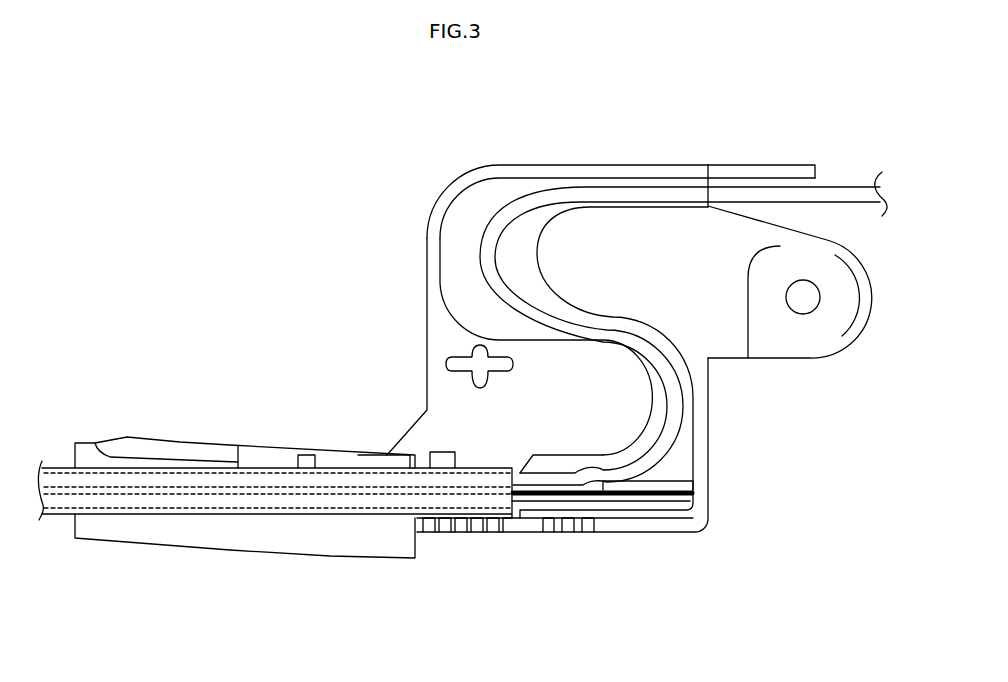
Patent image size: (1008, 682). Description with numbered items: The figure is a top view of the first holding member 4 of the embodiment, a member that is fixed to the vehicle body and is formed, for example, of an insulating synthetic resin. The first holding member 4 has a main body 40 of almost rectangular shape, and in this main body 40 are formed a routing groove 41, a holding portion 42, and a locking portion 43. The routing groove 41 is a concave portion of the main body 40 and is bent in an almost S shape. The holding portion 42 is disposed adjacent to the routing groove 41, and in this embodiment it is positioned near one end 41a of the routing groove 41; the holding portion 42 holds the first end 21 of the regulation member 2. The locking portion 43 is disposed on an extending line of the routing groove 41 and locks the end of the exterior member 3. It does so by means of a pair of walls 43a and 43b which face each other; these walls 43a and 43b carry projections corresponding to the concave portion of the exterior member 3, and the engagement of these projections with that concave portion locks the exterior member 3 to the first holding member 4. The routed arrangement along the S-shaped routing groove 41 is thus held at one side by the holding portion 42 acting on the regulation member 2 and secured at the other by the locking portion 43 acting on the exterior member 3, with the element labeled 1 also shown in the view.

The circuit board 1 is at (678, 394).
The regulation member 2 is at (545, 498).
The first end 21 is at (658, 498).
The exterior member 3 is at (364, 462).
The first holding member 4 is at (413, 130).
The main body 40 is at (541, 164).
The routing groove 41 is at (457, 262).
The one end 41a is at (558, 463).
The holding portion 42 is at (613, 545).
The locking portion 43 is at (472, 546).
The wall 43a is at (436, 459).
The wall 43b is at (442, 527).